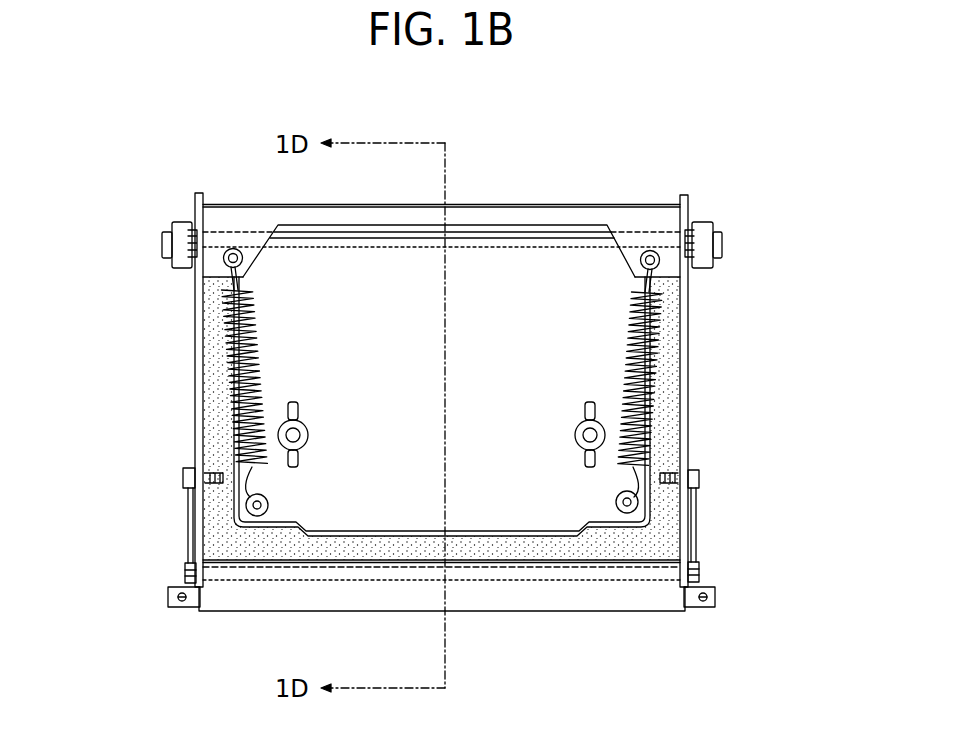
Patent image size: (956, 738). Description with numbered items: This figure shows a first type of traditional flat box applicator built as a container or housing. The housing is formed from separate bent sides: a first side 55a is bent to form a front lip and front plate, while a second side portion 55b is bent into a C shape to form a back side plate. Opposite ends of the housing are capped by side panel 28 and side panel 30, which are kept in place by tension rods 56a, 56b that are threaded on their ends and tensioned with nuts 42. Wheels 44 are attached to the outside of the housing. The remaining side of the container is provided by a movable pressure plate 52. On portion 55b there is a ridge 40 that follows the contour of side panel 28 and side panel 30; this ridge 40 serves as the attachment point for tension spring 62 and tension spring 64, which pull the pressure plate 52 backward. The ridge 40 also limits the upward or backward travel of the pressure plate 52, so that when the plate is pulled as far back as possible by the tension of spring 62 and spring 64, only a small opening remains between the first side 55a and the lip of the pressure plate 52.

The side panel 28 is at (688, 380).
The side panel 30 is at (195, 400).
The ridge 40 is at (260, 249).
The nuts 42 is at (187, 230).
The wheels 44 is at (172, 263).
The pressure plate 52 is at (441, 390).
The first side 55a is at (598, 613).
The second side portion 55b is at (667, 215).
The tension rod 56a is at (518, 556).
The tension rod 56b is at (475, 247).
The tension spring 62 is at (662, 303).
The tension spring 64 is at (227, 343).